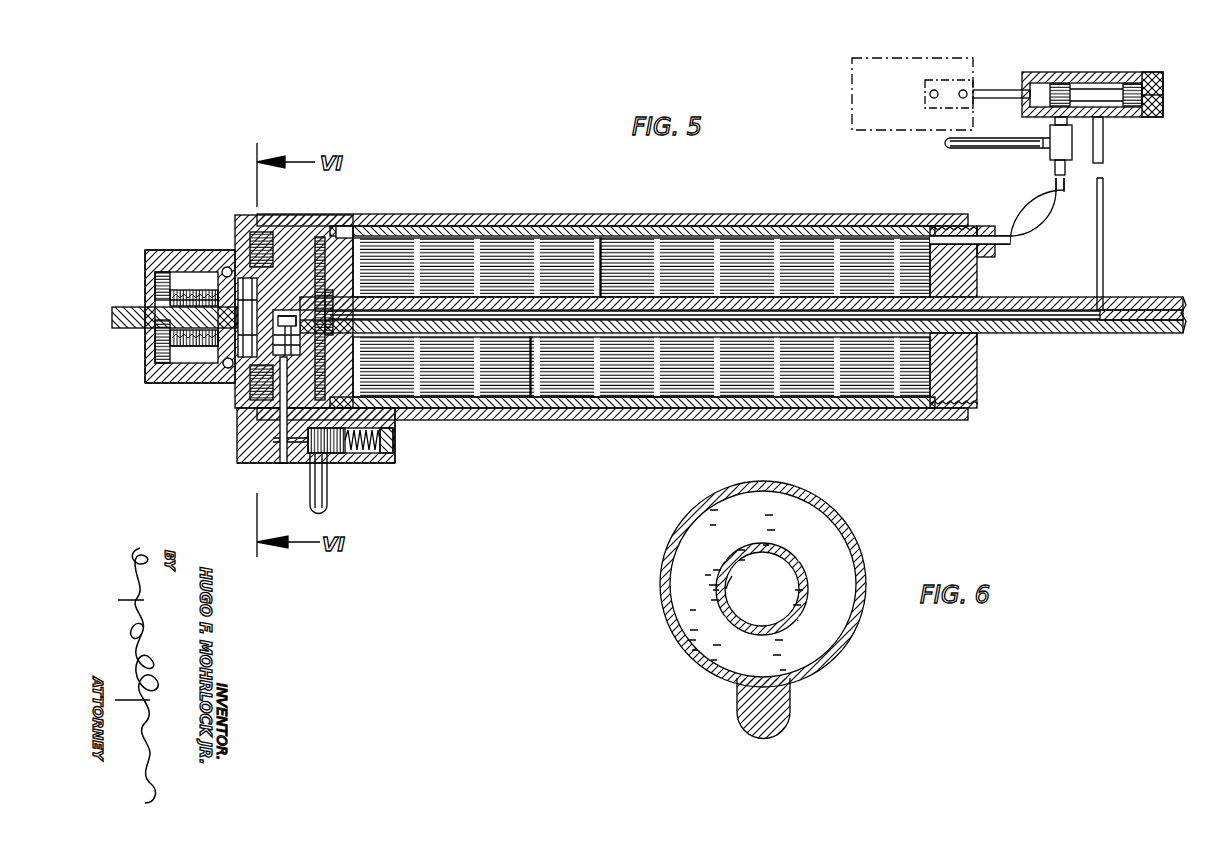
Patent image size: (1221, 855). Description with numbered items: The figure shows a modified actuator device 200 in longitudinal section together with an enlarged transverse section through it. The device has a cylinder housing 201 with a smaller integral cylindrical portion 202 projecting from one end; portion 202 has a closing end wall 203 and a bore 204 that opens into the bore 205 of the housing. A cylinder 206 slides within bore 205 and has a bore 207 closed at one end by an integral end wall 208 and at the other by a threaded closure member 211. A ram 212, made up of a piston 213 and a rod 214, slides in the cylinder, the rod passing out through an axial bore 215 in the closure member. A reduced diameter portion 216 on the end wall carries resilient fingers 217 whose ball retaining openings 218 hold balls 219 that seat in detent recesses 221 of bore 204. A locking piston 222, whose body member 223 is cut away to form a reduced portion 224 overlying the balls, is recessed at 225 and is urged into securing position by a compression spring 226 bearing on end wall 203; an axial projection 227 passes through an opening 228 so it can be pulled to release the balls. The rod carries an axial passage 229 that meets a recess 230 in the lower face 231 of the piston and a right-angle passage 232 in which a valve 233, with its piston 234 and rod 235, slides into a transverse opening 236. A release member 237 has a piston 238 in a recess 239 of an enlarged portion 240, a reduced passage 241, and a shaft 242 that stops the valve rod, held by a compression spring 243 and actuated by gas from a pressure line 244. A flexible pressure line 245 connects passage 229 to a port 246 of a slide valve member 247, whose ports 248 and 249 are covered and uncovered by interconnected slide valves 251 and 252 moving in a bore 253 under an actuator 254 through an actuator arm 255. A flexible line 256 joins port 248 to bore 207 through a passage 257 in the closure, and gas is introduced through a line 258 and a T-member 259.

In FIG. 5, the actuator device 200 is at (578, 212).
In FIG. 5, the cylinder housing 201 is at (692, 212).
In FIG. 6, the cylinder housing 201 is at (832, 504).
In FIG. 5, the cylindrical portion 202 is at (186, 262).
In FIG. 5, the end wall 203 is at (147, 255).
In FIG. 5, the bore 204 is at (153, 386).
In FIG. 5, the bore 205 is at (268, 238).
In FIG. 5, the cylinder 206 is at (578, 395).
In FIG. 5, the bore 207 is at (650, 395).
In FIG. 5, the end wall 208 is at (320, 240).
In FIG. 5, the closure member 211 is at (980, 370).
In FIG. 5, the ram 212 is at (700, 330).
In FIG. 5, the piston 213 is at (360, 344).
In FIG. 5, the rod 214 is at (530, 336).
In FIG. 5, the axial bore 215 is at (980, 336).
In FIG. 5, the reduced diameter portion 216 is at (263, 290).
In FIG. 5, the resilient fingers 217 is at (222, 368).
In FIG. 6, the resilient fingers 217 is at (753, 634).
In FIG. 5, the ball retaining openings 218 is at (195, 362).
In FIG. 5, the balls 219 is at (200, 360).
In FIG. 5, the detent recesses 221 is at (215, 280).
In FIG. 5, the locking piston 222 is at (158, 262).
In FIG. 5, the body member 223 is at (190, 365).
In FIG. 5, the reduced portion 224 is at (240, 360).
In FIG. 6, the reduced portion 224 is at (743, 568).
In FIG. 5, the recess 225 is at (158, 362).
In FIG. 5, the compression spring 226 is at (165, 340).
In FIG. 5, the axial projection 227 is at (125, 307).
In FIG. 5, the opening 228 is at (143, 300).
In FIG. 5, the passage 229 is at (600, 305).
In FIG. 5, the recess 230 is at (357, 288).
In FIG. 5, the lower face 231 is at (345, 250).
In FIG. 5, the right-angle passage 232 is at (227, 267).
In FIG. 5, the valve 233 is at (300, 322).
In FIG. 5, the piston 234 is at (300, 342).
In FIG. 5, the rod 235 is at (390, 410).
In FIG. 5, the transverse opening 236 is at (275, 440).
In FIG. 5, the release member 237 is at (386, 456).
In FIG. 5, the piston 238 is at (338, 453).
In FIG. 5, the recess 239 is at (368, 455).
In FIG. 5, the enlarged portion 240 is at (393, 462).
In FIG. 6, the enlarged portion 240 is at (752, 733).
In FIG. 5, the reduced passage 241 is at (284, 463).
In FIG. 5, the shaft 242 is at (258, 466).
In FIG. 5, the compression spring 243 is at (382, 456).
In FIG. 5, the pressure line 244 is at (316, 490).
In FIG. 5, the flexible pressure line 245 is at (1105, 200).
In FIG. 5, the port 246 is at (1105, 120).
In FIG. 5, the slide valve member 247 is at (1090, 72).
In FIG. 5, the port 248 is at (1055, 120).
In FIG. 5, the port 249 is at (1145, 75).
In FIG. 5, the slide valve 251 is at (1058, 84).
In FIG. 5, the slide valve 252 is at (1140, 108).
In FIG. 5, the bore 253 is at (1110, 90).
In FIG. 5, the actuator 254 is at (852, 103).
In FIG. 5, the actuator arm 255 is at (1000, 90).
In FIG. 5, the flexible line 256 is at (1054, 196).
In FIG. 5, the passage 257 is at (958, 218).
In FIG. 5, the line 258 is at (948, 145).
In FIG. 5, the T-member 259 is at (1052, 152).